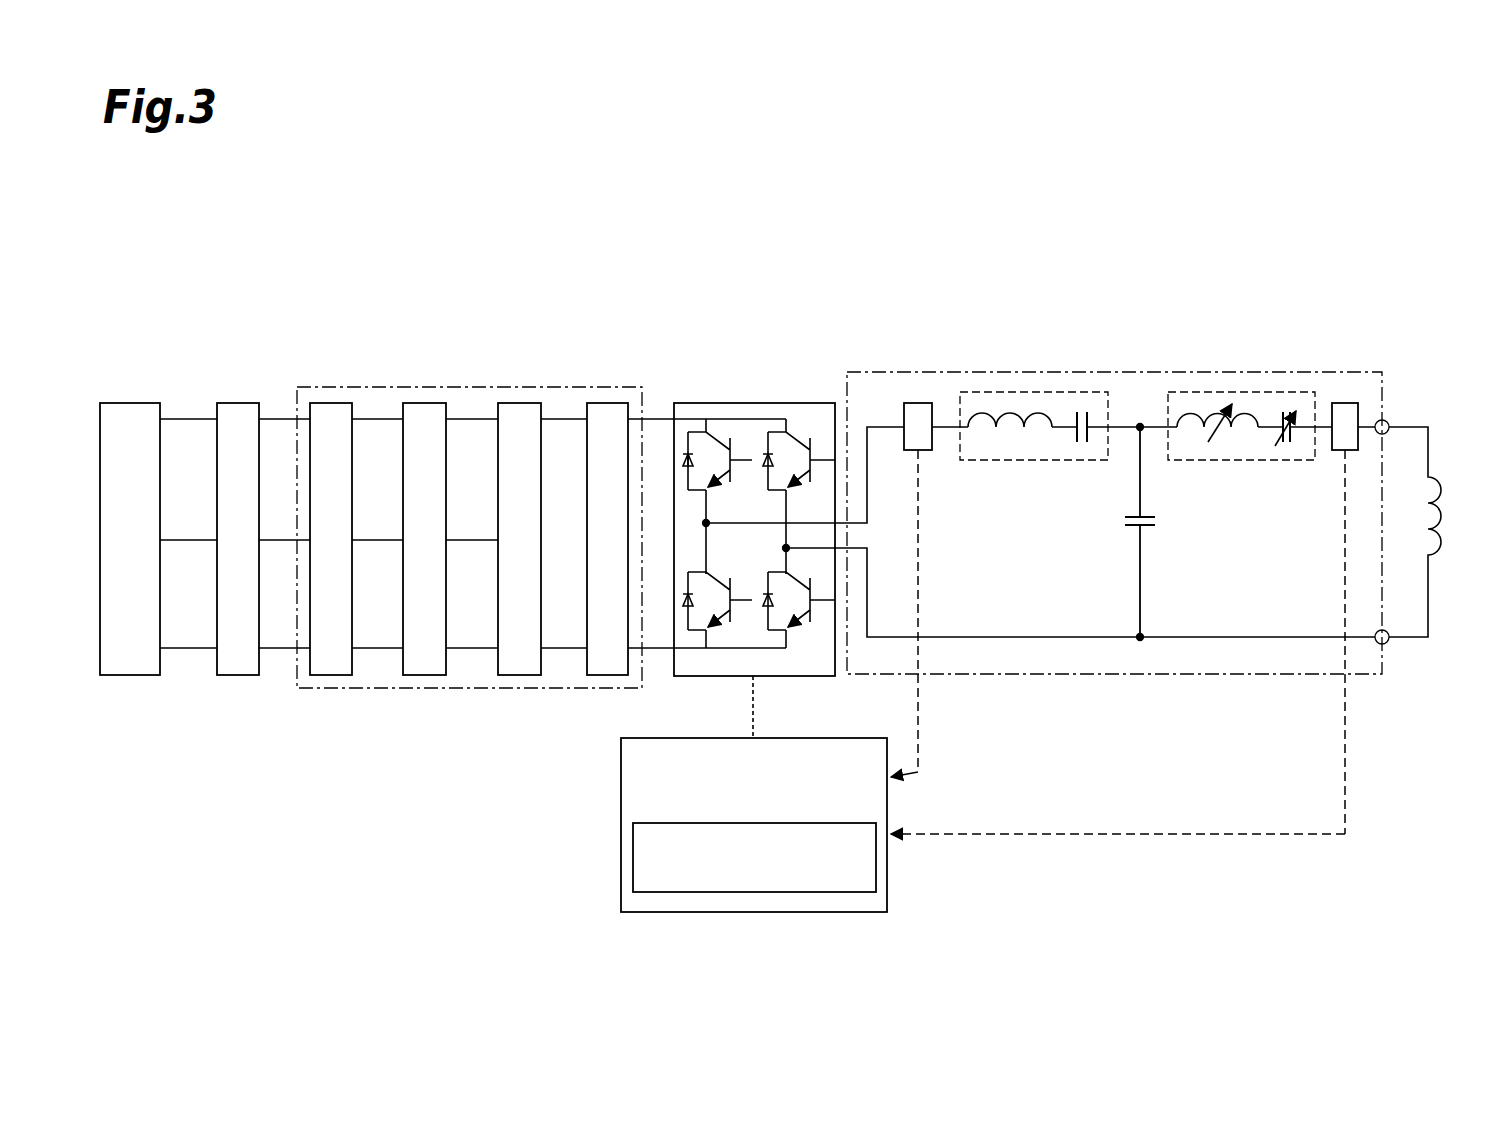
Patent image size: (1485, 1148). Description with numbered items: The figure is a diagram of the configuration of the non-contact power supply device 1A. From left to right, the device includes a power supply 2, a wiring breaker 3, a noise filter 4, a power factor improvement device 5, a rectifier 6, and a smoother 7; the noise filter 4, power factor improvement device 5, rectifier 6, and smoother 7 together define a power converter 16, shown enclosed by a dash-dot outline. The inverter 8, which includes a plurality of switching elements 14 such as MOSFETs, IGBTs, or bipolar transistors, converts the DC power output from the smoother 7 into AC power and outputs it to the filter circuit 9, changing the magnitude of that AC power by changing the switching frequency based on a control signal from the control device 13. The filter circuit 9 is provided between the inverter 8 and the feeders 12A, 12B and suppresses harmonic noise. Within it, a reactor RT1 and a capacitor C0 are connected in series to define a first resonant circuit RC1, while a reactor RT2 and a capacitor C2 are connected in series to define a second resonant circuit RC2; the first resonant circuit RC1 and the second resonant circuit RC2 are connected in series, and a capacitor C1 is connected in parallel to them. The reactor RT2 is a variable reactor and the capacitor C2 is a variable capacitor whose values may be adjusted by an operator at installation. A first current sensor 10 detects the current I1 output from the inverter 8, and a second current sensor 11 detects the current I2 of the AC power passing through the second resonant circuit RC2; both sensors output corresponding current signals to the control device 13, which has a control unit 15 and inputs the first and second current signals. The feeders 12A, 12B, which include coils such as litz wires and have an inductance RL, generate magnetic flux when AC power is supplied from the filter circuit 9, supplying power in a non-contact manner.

The non-contact power supply device 1A is at (1410, 219).
The power supply 2 is at (125, 403).
The wiring breaker 3 is at (238, 403).
The noise filter 4 is at (330, 403).
The power factor improvement device 5 is at (425, 403).
The rectifier 6 is at (520, 403).
The smoother 7 is at (608, 403).
The inverter 8 is at (700, 403).
The switching element 14 is at (800, 440).
The power converter 16 is at (405, 688).
The filter circuit 9 is at (1185, 675).
The first current sensor 10 is at (918, 403).
The second current sensor 11 is at (1345, 403).
The first resonant circuit RC1 is at (998, 392).
The reactor RT1 is at (998, 440).
The capacitor C0 is at (1088, 412).
The capacitor C1 is at (1134, 525).
The second resonant circuit RC2 is at (1205, 392).
The reactor RT2 is at (1200, 440).
The capacitor C2 is at (1280, 412).
The feeder 12A is at (1428, 440).
The feeder 12B is at (1382, 637).
The inductance RL is at (1442, 550).
The control device 13 is at (621, 766).
The control unit 15 is at (633, 850).
The current I1 is at (921, 613).
The current I2 is at (1118, 663).